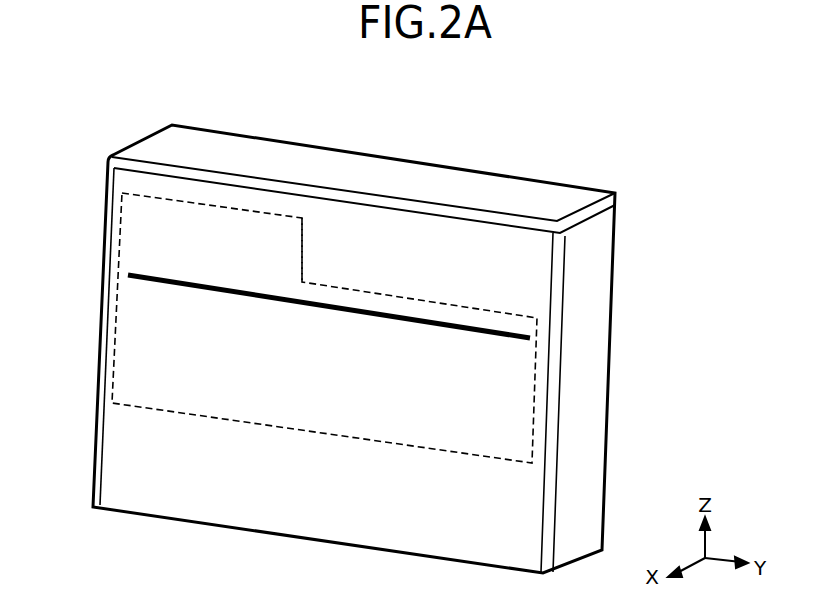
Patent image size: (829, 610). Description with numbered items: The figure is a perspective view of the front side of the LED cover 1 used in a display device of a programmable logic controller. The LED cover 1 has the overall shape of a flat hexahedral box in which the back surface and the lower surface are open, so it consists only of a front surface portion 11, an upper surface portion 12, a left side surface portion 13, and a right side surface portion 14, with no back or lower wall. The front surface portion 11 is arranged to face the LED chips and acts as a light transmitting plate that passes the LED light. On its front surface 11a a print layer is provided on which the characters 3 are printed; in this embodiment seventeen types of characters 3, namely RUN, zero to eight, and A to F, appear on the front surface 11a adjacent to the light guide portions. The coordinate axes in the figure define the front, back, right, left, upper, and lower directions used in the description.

The LED cover 1 is at (260, 152).
The characters 3 is at (188, 415).
The front surface portion 11 is at (373, 262).
The front surface 11a is at (430, 270).
The upper surface portion 12 is at (512, 195).
The left side surface portion 13 is at (98, 333).
The right side surface portion 14 is at (587, 408).